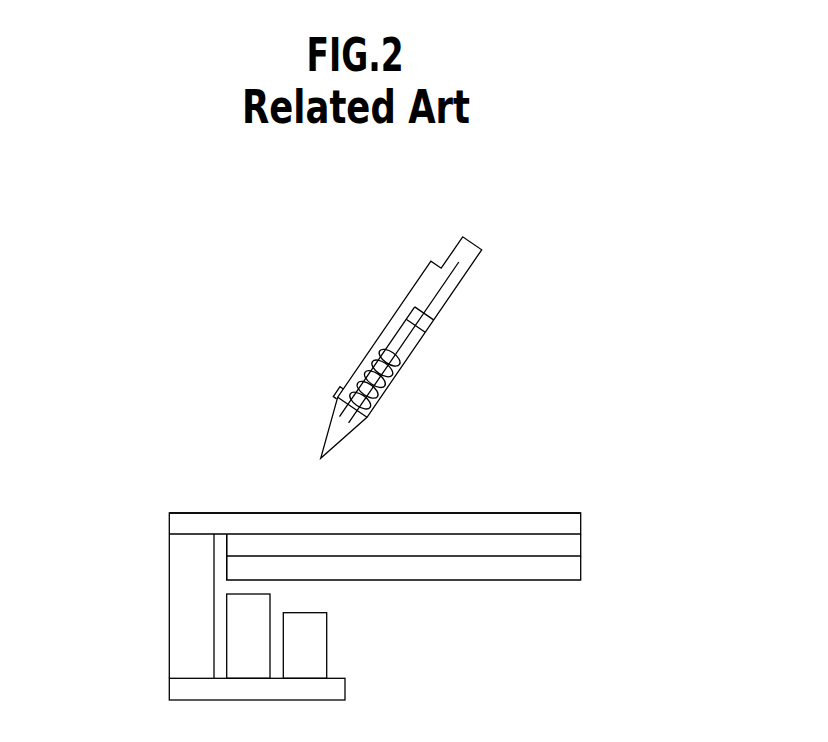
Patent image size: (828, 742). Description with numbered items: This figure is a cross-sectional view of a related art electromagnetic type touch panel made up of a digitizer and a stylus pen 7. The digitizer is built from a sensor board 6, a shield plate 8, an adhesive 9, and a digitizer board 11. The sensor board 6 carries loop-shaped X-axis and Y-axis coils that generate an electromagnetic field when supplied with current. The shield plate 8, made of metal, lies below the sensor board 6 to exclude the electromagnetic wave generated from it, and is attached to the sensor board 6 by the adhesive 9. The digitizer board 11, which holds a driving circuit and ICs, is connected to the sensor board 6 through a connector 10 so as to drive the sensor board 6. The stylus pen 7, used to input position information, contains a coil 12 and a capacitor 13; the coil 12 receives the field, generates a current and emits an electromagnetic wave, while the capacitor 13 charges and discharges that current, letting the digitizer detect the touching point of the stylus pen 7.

The sensor board 6 is at (575, 523).
The stylus pen 7 is at (466, 260).
The shield plate 8 is at (516, 571).
The adhesive 9 is at (575, 548).
The connector 10 is at (168, 607).
The digitizer board 11 is at (345, 690).
The coil 12 is at (349, 390).
The capacitor 13 is at (410, 315).